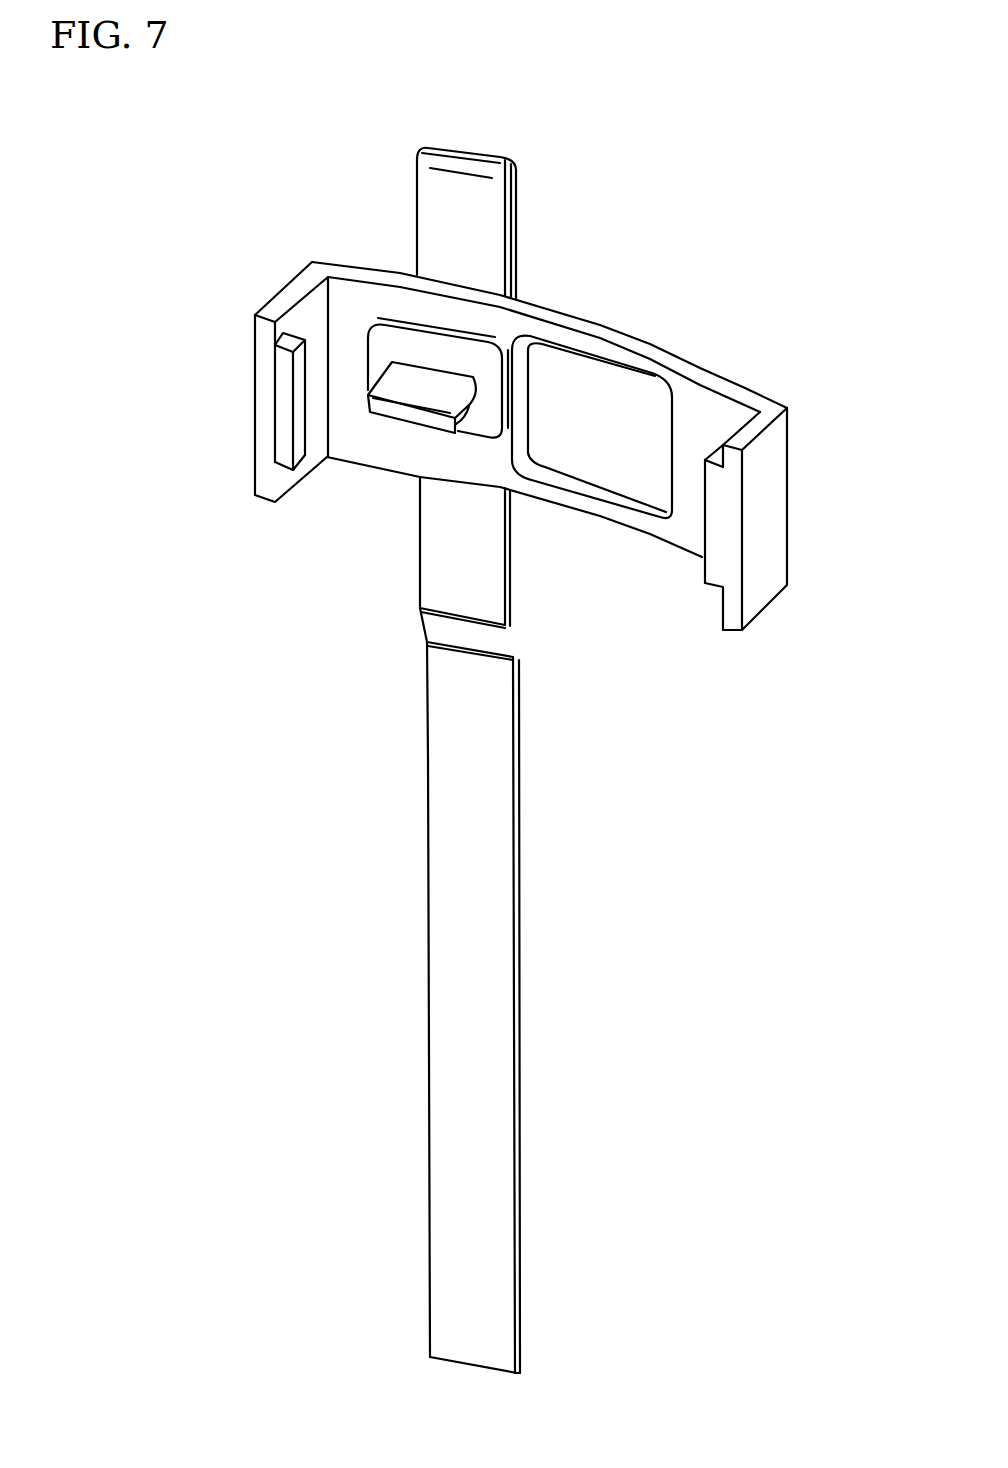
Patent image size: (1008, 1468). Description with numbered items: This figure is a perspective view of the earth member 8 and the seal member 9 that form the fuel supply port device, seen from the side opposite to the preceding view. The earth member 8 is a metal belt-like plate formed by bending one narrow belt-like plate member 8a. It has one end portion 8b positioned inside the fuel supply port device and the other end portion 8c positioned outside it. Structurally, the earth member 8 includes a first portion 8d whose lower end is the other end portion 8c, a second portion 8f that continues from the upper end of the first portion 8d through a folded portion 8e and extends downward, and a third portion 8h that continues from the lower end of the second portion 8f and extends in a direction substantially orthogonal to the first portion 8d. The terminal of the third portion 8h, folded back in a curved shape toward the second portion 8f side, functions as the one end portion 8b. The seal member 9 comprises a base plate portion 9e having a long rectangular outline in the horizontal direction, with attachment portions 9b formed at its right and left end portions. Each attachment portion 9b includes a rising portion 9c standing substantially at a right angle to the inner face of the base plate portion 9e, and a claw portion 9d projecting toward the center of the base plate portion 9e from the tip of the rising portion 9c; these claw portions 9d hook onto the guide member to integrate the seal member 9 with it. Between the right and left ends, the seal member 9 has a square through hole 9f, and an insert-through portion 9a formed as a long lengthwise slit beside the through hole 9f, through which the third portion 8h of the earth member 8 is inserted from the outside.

The earth member 8 is at (460, 960).
The narrow belt-like plate member 8a is at (490, 1157).
The one end portion 8b is at (390, 423).
The other end portion 8c is at (447, 1363).
The first portion 8d is at (515, 857).
The folded portion 8e is at (467, 147).
The second portion 8f is at (480, 235).
The third portion 8h is at (417, 430).
The seal member 9 is at (692, 360).
The insert-through portion 9a is at (425, 363).
The attachment portions 9b is at (290, 333).
The rising portion 9c is at (282, 292).
The claw portion 9d is at (287, 407).
The base plate portion 9e is at (590, 340).
The through hole 9f is at (637, 480).